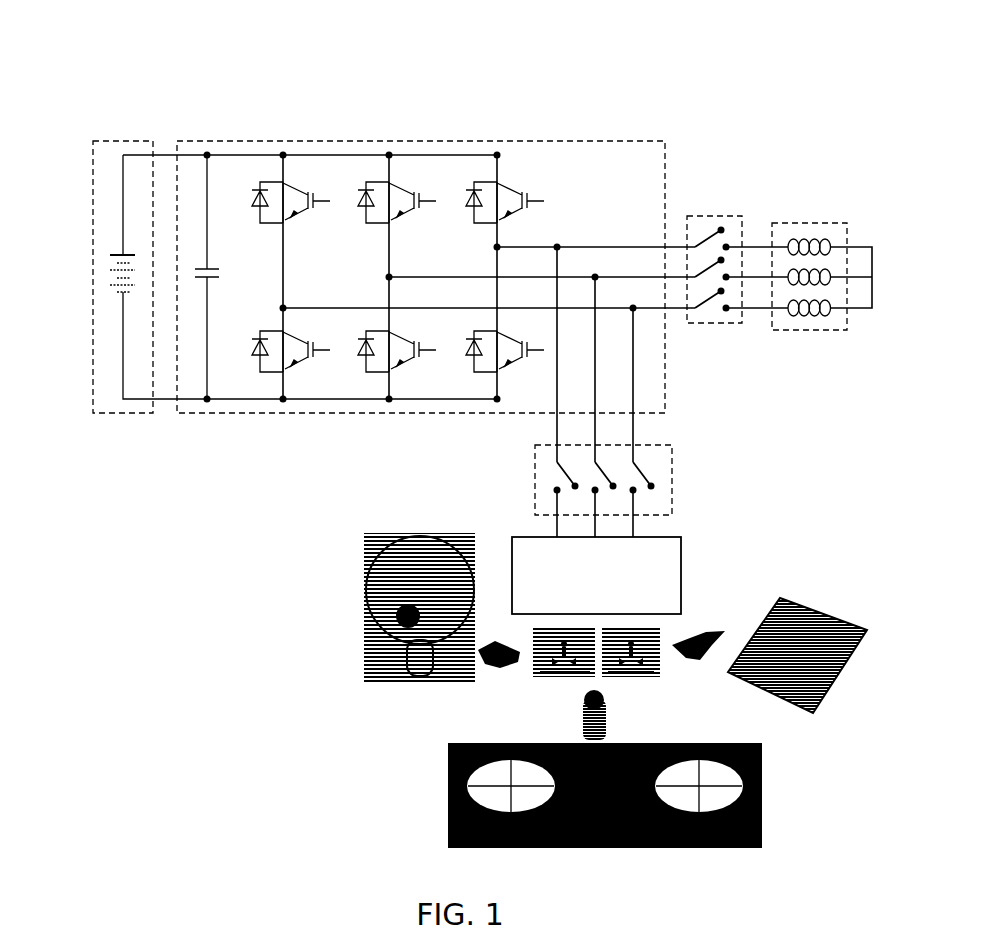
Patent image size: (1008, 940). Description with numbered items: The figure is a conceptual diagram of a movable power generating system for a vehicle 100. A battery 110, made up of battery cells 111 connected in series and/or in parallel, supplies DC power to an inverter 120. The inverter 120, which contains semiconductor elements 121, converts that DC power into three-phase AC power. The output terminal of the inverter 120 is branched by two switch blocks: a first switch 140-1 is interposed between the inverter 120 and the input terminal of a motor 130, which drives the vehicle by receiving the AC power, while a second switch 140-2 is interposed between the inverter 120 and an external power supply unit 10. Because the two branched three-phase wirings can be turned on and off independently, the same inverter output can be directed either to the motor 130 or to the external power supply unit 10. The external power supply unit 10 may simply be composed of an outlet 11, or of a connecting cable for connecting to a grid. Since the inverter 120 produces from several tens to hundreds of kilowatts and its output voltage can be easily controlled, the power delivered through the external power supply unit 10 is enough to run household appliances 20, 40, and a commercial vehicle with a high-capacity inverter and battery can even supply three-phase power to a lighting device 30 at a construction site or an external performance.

The vehicle 100 is at (158, 76).
The battery 110 is at (118, 140).
The battery cell 111 is at (112, 254).
The inverter 120 is at (416, 140).
The semiconductor element 121 is at (291, 186).
The motor 130 is at (806, 222).
The first switch 140-1 is at (712, 215).
The second switch 140-2 is at (672, 478).
The external power supply unit 10 is at (681, 575).
The power outlet 11 is at (660, 675).
The household appliance 20 is at (362, 605).
The lighting device 30 is at (447, 800).
The household appliance 40 is at (805, 600).